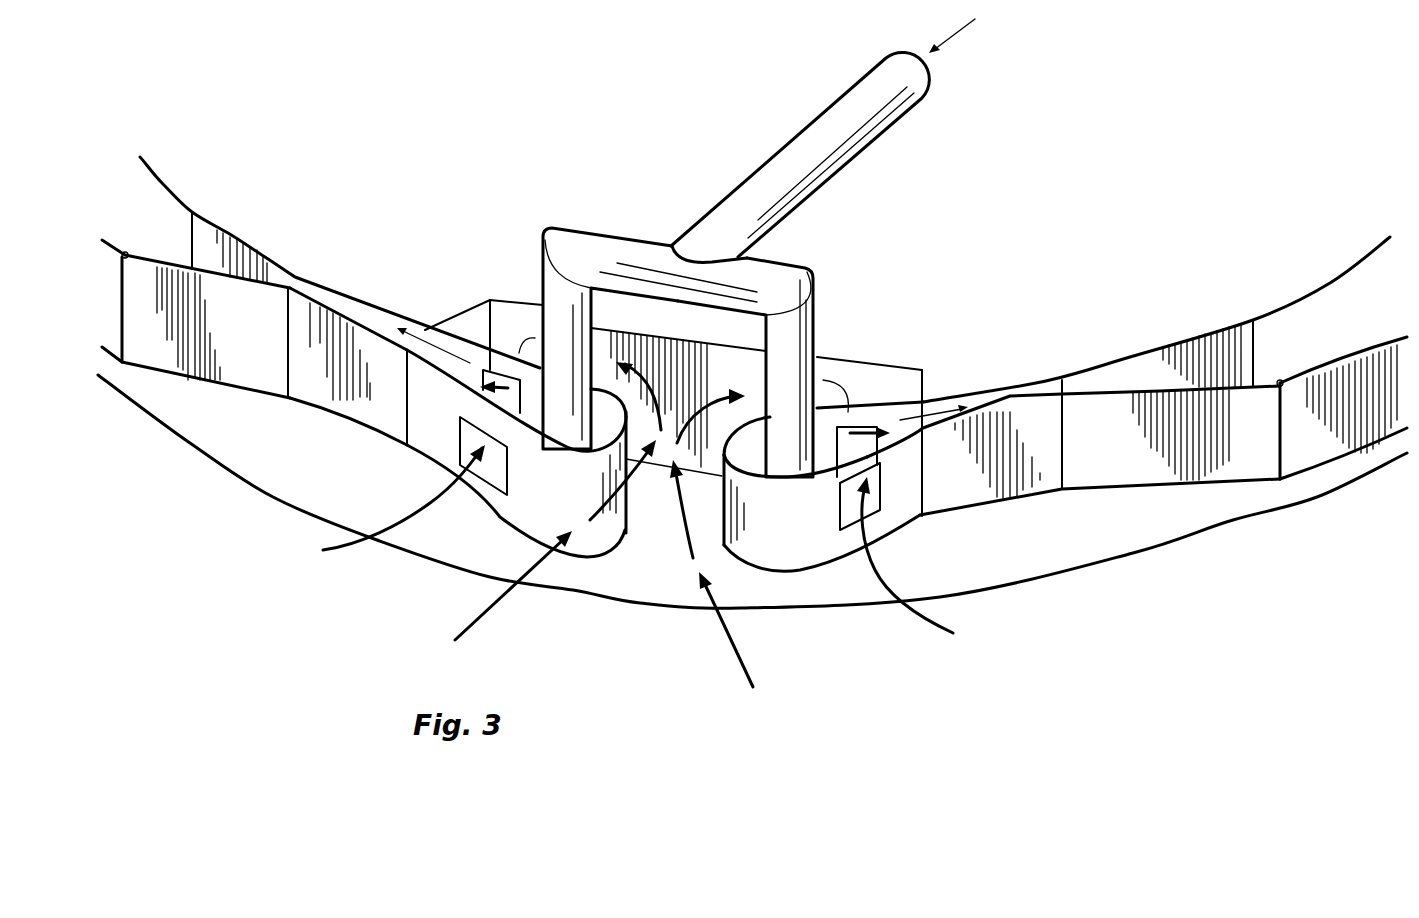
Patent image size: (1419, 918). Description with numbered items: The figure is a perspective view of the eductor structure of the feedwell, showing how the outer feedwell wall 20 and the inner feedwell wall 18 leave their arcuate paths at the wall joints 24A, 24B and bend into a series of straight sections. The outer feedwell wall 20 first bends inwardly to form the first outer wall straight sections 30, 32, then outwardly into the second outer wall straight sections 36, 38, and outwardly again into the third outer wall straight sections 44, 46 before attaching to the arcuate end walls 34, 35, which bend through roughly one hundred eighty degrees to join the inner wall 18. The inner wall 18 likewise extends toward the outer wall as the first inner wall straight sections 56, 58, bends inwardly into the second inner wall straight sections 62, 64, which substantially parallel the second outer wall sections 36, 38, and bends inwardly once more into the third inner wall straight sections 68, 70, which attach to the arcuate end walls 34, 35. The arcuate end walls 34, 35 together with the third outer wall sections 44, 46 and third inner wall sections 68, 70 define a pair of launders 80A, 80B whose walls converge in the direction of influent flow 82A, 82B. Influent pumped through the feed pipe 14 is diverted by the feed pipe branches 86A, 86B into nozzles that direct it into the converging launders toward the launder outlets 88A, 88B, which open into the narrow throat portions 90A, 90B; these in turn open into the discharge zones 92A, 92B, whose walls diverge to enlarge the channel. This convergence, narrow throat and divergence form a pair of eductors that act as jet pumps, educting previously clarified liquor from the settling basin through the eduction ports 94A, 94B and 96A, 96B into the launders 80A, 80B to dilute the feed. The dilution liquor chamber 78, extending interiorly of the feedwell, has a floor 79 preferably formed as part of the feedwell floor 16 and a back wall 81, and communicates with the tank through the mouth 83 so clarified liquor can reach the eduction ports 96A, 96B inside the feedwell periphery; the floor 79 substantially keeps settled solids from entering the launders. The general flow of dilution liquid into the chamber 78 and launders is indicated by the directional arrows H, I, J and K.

The feed pipe 14 is at (897, 120).
The feedwell floor 16 is at (1107, 538).
The inner feedwell wall 18 is at (1352, 265).
The outer feedwell wall 20 is at (1303, 389).
The wall joint 24A is at (1281, 386).
The wall joint 24B is at (125, 254).
The first outer wall straight section 30 is at (1244, 462).
The first outer wall straight section 32 is at (250, 368).
The arcuate end wall 34 is at (770, 537).
The arcuate end wall 35 is at (612, 522).
The second outer wall straight section 36 is at (970, 490).
The second outer wall straight section 38 is at (315, 388).
The third outer wall straight section 44 is at (900, 505).
The third outer wall straight section 46 is at (552, 517).
The first inner wall straight section 56 is at (1218, 330).
The first inner wall straight section 58 is at (217, 220).
The second inner wall straight section 62 is at (1060, 391).
The second inner wall straight section 64 is at (338, 320).
The third inner wall straight section 68 is at (835, 410).
The third inner wall straight section 70 is at (517, 352).
The dilution liquor chamber 78 is at (697, 378).
The floor 79 is at (575, 596).
The back wall 81 is at (820, 367).
The launder 80A is at (822, 422).
The launder 80B is at (530, 382).
The direction of influent flow 82A is at (968, 398).
The direction of influent flow 82B is at (440, 340).
The mouth 83 is at (650, 578).
The feed pipe branch 86A is at (784, 263).
The feed pipe branch 86B is at (618, 242).
The launder outlet 88A is at (907, 408).
The launder outlet 88B is at (423, 327).
The narrow throat portion 90A is at (1010, 396).
The narrow throat portion 90B is at (367, 313).
The discharge zone 92A is at (1122, 370).
The discharge zone 92B is at (266, 284).
The eduction port 94A is at (857, 532).
The eduction port 94B is at (430, 537).
The eduction port 96A is at (863, 423).
The eduction port 96B is at (484, 370).
The directional arrow H is at (917, 566).
The directional arrow I is at (690, 533).
The directional arrow J is at (544, 548).
The directional arrow K is at (391, 503).